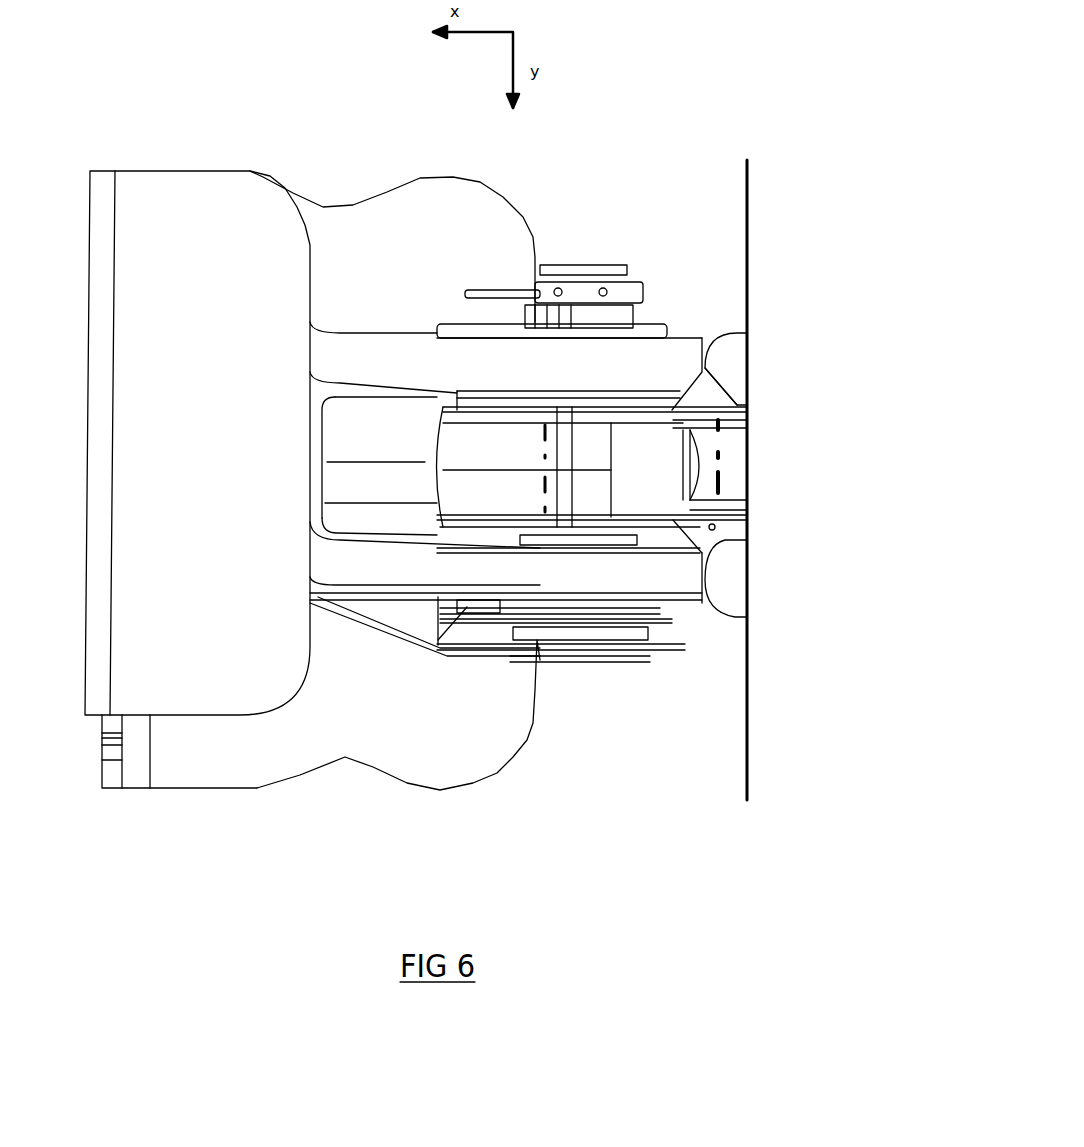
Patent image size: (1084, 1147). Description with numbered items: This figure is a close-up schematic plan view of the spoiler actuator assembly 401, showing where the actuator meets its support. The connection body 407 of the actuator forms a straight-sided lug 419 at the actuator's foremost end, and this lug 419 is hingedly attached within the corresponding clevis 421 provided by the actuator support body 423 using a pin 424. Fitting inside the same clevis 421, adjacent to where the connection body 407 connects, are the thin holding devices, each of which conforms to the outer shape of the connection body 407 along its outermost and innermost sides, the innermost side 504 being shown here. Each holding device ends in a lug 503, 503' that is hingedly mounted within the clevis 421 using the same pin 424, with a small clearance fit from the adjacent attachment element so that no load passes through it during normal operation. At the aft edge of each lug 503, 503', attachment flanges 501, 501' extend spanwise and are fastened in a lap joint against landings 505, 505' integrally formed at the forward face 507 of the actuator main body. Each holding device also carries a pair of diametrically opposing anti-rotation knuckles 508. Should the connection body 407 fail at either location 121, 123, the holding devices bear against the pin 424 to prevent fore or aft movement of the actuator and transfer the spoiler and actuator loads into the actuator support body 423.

The spoiler actuator assembly 401 is at (658, 82).
The actuator support body 423 is at (393, 450).
The lug 503' is at (547, 267).
The anti-rotation knuckles 508 is at (562, 511).
The clevis 421 is at (587, 352).
The lug 419 is at (627, 292).
The forward face 507 is at (778, 326).
The landing 505' is at (803, 339).
The attachment flange 501' is at (803, 364).
The innermost side 504 is at (801, 434).
The failure location 121 is at (811, 447).
The attachment flange 501 is at (783, 497).
The landing 505 is at (798, 558).
The lug 503 is at (498, 686).
The failure location 123 is at (592, 628).
The pin 424 is at (561, 728).
The connection body 407 is at (732, 498).